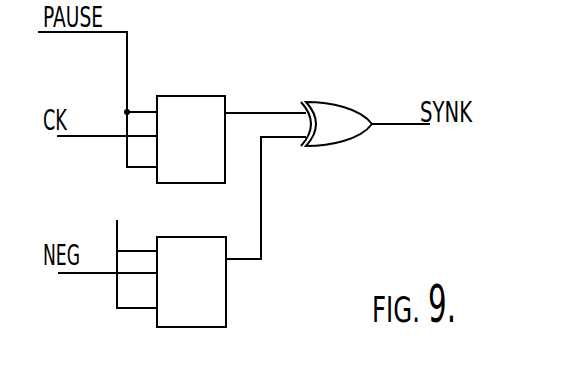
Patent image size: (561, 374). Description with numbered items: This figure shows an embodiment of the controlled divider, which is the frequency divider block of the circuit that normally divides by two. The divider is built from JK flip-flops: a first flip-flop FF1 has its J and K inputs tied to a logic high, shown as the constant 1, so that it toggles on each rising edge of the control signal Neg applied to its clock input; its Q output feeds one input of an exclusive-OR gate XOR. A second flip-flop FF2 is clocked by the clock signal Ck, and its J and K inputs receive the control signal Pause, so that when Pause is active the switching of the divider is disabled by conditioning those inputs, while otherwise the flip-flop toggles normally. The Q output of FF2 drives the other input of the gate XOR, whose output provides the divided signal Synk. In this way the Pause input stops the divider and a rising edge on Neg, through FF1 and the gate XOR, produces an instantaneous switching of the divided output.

The first JK flip-flop FF1 is at (191, 266).
The second JK flip-flop FF2 is at (191, 123).
The exclusive-OR gate XOR is at (336, 143).
The logic-one constant input 1 is at (134, 248).